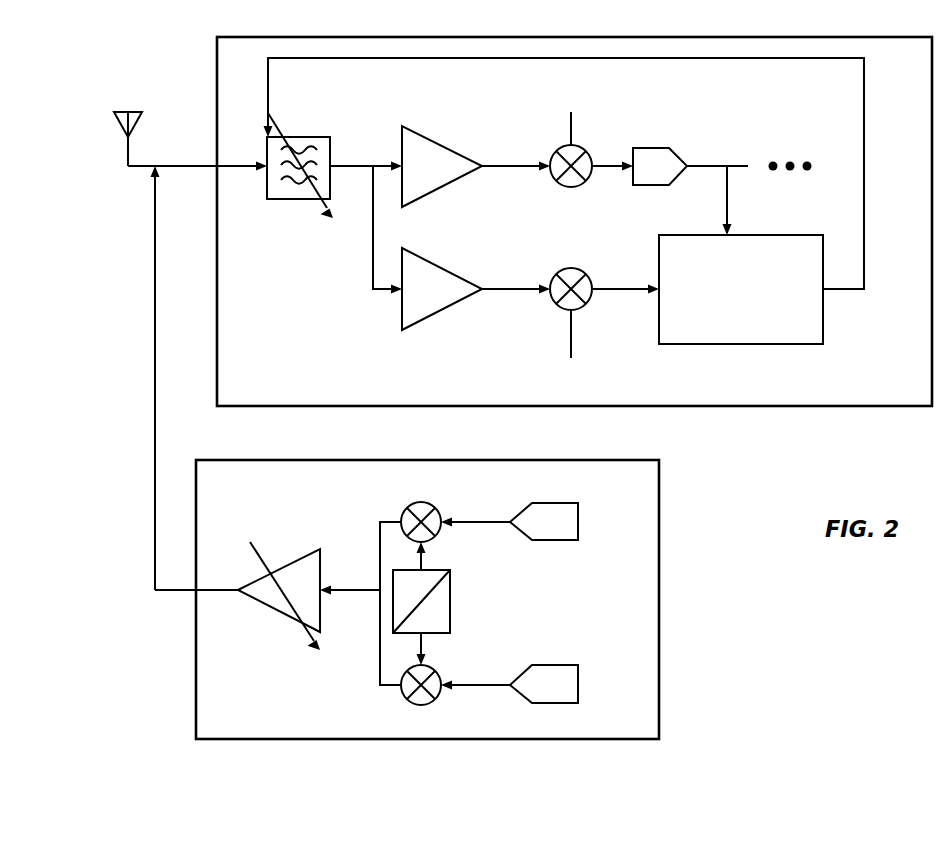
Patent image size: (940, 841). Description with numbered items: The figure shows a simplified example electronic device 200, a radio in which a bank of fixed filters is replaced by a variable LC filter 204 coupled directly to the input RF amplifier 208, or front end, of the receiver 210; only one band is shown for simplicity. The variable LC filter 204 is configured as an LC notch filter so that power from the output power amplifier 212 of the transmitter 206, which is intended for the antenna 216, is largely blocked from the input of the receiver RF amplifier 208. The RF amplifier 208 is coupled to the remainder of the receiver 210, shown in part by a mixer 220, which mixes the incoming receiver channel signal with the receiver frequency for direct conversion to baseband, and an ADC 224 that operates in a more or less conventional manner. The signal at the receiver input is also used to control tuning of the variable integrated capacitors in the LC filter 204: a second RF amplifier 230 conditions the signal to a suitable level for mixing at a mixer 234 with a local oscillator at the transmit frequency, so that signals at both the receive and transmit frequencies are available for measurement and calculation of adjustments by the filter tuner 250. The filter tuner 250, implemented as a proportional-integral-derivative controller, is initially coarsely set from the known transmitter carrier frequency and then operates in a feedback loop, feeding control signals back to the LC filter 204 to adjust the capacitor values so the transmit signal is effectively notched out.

The electronic device 200 is at (866, 468).
The variable LC filter 204 is at (320, 137).
The transmitter 206 is at (659, 528).
The RF amplifier 208 is at (443, 187).
The receiver 210 is at (618, 406).
The output power amplifier 212 is at (268, 606).
The antenna 216 is at (128, 112).
The mixer 220 is at (574, 187).
The ADC 224 is at (657, 148).
The RF amplifier 230 is at (450, 306).
The mixer 234 is at (571, 268).
The filter tuner 250 is at (762, 344).